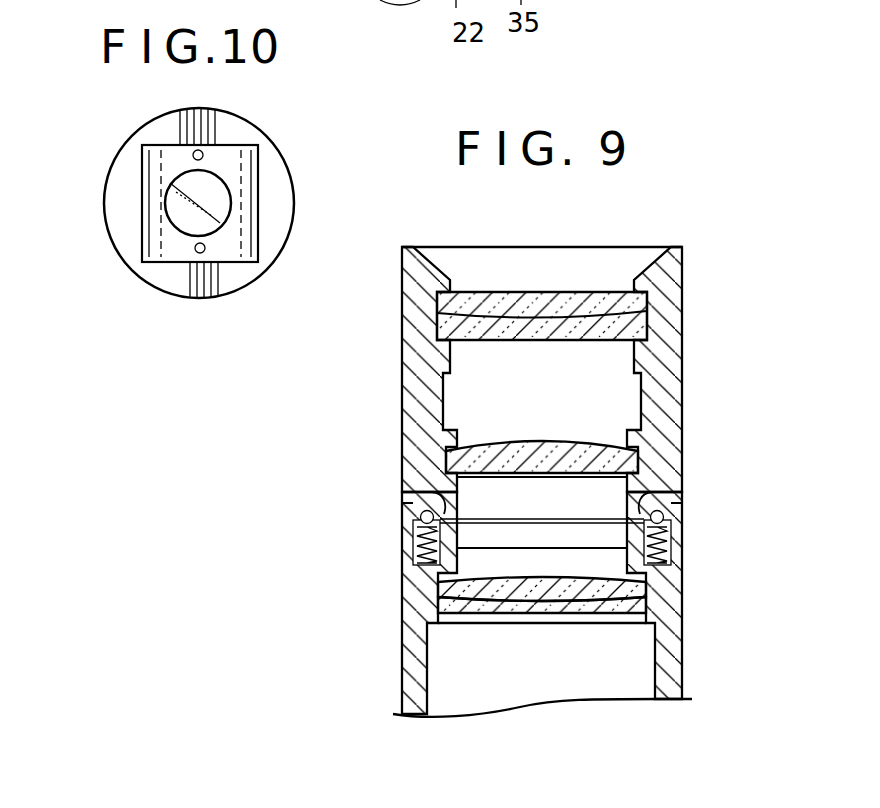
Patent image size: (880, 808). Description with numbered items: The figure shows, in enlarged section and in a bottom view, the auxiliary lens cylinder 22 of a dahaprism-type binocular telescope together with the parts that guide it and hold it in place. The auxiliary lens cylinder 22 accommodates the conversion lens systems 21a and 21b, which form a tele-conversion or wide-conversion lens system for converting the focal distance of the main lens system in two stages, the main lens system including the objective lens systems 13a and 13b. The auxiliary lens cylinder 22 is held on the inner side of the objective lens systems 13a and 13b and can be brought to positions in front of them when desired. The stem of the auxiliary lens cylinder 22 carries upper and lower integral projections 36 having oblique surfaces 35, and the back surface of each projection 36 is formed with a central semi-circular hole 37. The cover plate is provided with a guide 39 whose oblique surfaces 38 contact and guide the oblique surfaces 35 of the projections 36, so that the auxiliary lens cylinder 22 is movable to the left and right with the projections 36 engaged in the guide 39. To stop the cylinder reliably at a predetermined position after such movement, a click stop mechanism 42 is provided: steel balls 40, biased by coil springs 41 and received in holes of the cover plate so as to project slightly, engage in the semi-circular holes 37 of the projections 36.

In FIG. 9, the objective lens system 13a is at (590, 590).
In FIG. 9, the objective lens system 13b is at (545, 600).
In FIG. 9, the conversion lens system 21a is at (583, 327).
In FIG. 9, the conversion lens system 21b is at (576, 452).
In FIG. 10, the auxiliary lens cylinder 22 is at (125, 190).
In FIG. 9, the auxiliary lens cylinder 22 is at (682, 350).
In FIG. 9, the oblique surface 35 is at (443, 488).
In FIG. 10, the projection 36 is at (252, 207).
In FIG. 9, the projection 36 is at (415, 527).
In FIG. 10, the semi-circular hole 37 is at (203, 154).
In FIG. 9, the semi-circular hole 37 is at (440, 517).
In FIG. 9, the oblique surface 38 is at (402, 503).
In FIG. 9, the guide 39 is at (418, 535).
In FIG. 9, the steel ball 40 is at (422, 562).
In FIG. 9, the coil spring 41 is at (440, 627).
In FIG. 9, the click stop mechanism 42 is at (402, 617).